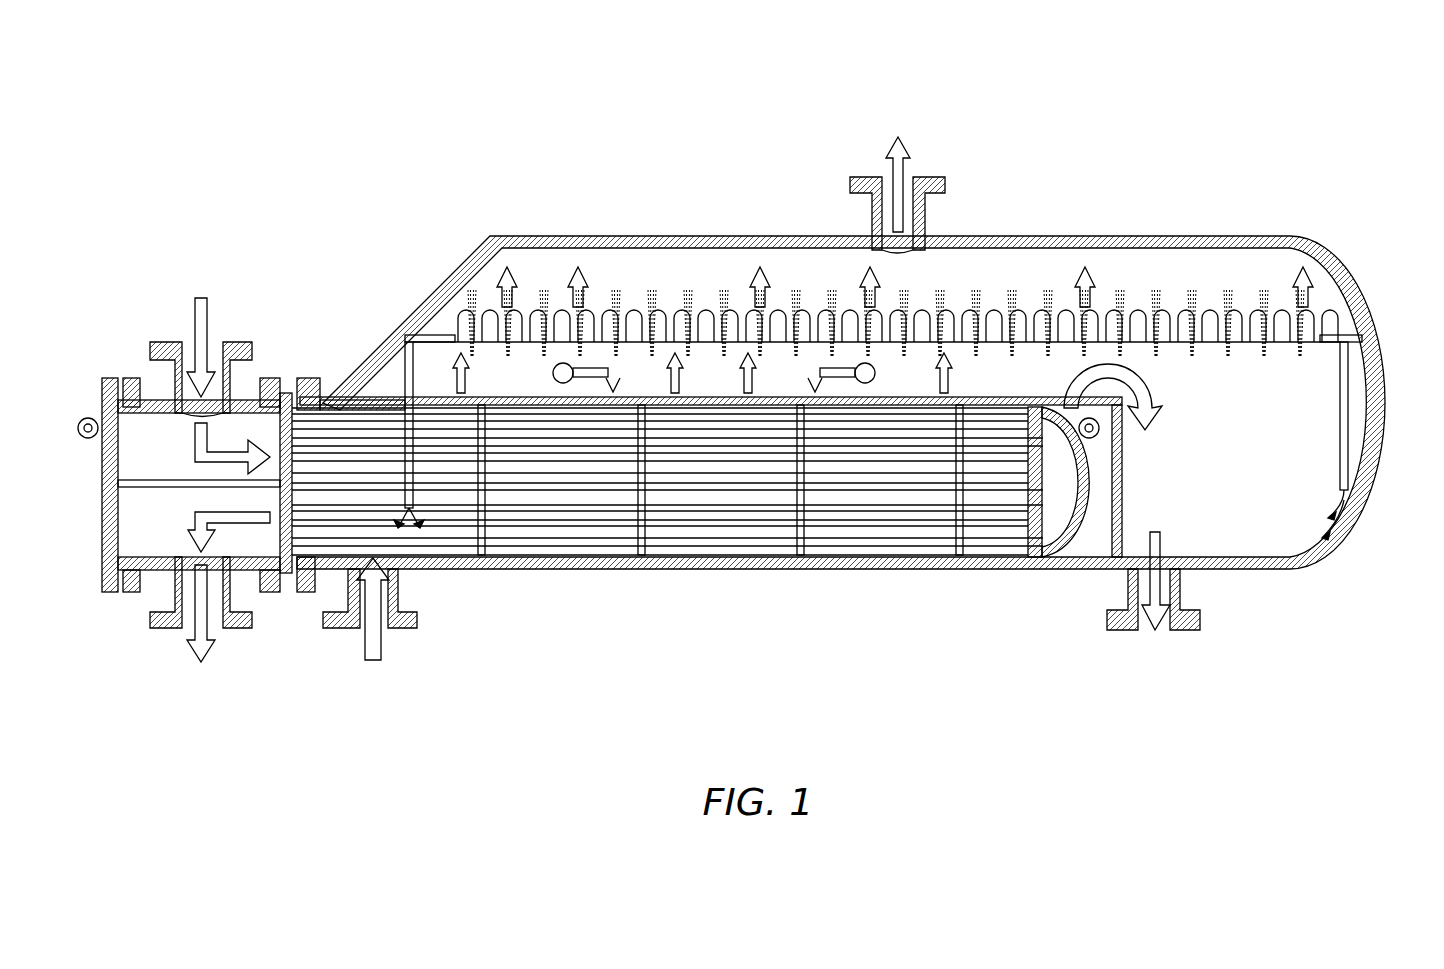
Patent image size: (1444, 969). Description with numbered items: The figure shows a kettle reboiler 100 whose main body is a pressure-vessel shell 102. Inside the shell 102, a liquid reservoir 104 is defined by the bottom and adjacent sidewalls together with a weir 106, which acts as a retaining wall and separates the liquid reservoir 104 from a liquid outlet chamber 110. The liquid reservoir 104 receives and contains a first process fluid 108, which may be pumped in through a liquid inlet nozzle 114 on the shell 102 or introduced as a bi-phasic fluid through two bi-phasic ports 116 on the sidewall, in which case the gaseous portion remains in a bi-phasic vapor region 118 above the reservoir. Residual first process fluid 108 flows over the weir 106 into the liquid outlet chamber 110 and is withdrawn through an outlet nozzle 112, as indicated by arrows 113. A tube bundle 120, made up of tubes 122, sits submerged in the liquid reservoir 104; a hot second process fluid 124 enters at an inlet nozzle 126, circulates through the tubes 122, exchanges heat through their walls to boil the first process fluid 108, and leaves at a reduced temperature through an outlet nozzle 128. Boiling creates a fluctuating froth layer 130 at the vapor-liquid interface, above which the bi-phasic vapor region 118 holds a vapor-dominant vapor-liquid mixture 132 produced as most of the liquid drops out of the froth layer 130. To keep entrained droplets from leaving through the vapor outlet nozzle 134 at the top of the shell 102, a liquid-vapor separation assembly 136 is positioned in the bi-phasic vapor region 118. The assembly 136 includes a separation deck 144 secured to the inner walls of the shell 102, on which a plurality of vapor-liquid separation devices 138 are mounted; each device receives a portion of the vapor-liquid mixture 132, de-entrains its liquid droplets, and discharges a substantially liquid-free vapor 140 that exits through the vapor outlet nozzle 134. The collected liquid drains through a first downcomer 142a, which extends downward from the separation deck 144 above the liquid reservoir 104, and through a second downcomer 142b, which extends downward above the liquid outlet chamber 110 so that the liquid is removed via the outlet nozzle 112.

The kettle reboiler 100 is at (355, 148).
The shell 102 is at (656, 236).
The liquid reservoir 104 is at (996, 546).
The weir 106 is at (1125, 480).
The first process fluid 108 is at (392, 648).
The liquid outlet chamber 110 is at (1237, 452).
The outlet nozzle 112 is at (1205, 620).
The arrows / residual portions 113 is at (1165, 545).
The liquid inlet nozzle 114 is at (395, 592).
The bi-phasic ports 116 is at (553, 376).
The bi-phasic vapor region 118 is at (708, 375).
The tube bundle 120 is at (665, 555).
The tubes 122 is at (955, 445).
The second process fluid 124 is at (195, 320).
The inlet nozzle 126 is at (240, 345).
The outlet nozzle 128 is at (155, 625).
The froth layer 130 is at (1090, 392).
The vapor-liquid mixture 132 is at (455, 382).
The vapor outlet nozzle 134 is at (945, 185).
The liquid-vapor separation assembly 136 is at (563, 310).
The vapor-liquid separation devices 138 is at (760, 310).
The substantially liquid-free vapor 140 is at (500, 290).
The first downcomer 142a is at (403, 387).
The second downcomer 142b is at (1350, 393).
The separation deck 144 is at (407, 335).